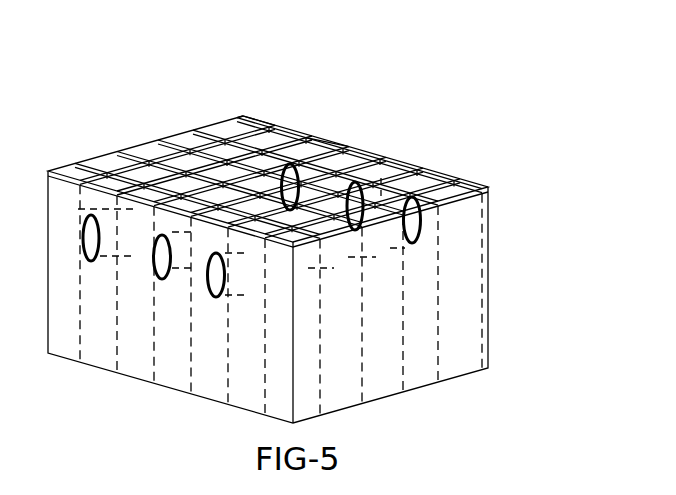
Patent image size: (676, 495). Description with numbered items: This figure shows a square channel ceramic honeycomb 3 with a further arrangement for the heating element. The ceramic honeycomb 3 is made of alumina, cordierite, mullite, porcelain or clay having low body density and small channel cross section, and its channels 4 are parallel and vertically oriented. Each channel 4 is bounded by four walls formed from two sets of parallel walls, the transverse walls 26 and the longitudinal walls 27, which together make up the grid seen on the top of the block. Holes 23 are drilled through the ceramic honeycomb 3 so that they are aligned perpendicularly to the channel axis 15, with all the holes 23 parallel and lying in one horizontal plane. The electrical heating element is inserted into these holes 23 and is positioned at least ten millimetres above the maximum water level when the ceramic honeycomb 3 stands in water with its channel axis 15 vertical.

The ceramic honeycomb 3 is at (286, 215).
The channels 4 is at (159, 152).
The channel axis 15 is at (381, 178).
The holes 23 is at (92, 205).
The transverse walls 26 is at (260, 118).
The longitudinal walls 27 is at (327, 152).